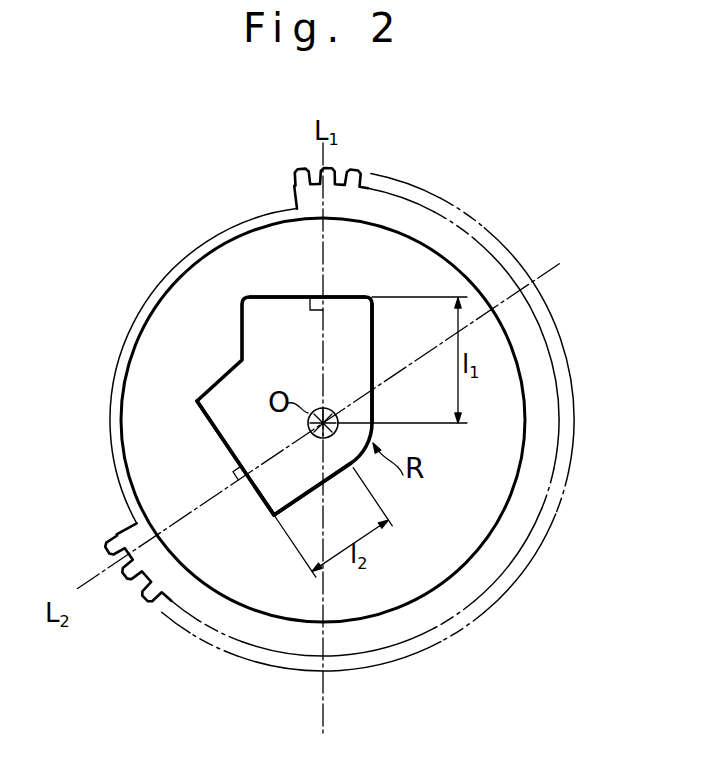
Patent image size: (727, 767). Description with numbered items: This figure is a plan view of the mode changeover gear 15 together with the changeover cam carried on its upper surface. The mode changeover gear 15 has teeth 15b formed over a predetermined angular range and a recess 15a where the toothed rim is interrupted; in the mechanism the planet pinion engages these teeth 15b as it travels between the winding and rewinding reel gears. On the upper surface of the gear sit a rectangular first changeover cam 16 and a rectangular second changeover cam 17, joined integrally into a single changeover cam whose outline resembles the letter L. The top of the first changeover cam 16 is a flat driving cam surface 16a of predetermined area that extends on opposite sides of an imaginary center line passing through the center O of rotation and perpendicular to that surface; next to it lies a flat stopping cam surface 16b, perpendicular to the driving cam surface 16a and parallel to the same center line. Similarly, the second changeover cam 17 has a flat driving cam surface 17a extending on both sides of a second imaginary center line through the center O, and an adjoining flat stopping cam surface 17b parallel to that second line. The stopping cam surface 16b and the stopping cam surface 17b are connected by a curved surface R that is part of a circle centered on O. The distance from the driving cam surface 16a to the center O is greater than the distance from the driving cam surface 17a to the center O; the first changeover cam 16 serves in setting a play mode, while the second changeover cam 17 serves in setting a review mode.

The mode changeover gear 15 is at (400, 422).
The recess 15a is at (188, 250).
The teeth 15b is at (493, 232).
The first changeover cam 16 is at (260, 333).
The driving cam surface 16a is at (280, 295).
The stopping cam surface 16b is at (377, 362).
The second changeover cam 17 is at (223, 425).
The driving cam surface 17a is at (244, 498).
The stopping cam surface 17b is at (307, 491).